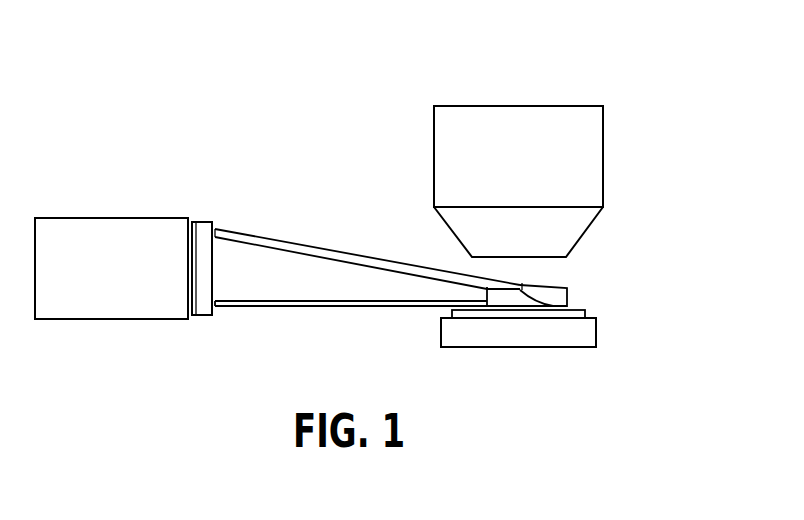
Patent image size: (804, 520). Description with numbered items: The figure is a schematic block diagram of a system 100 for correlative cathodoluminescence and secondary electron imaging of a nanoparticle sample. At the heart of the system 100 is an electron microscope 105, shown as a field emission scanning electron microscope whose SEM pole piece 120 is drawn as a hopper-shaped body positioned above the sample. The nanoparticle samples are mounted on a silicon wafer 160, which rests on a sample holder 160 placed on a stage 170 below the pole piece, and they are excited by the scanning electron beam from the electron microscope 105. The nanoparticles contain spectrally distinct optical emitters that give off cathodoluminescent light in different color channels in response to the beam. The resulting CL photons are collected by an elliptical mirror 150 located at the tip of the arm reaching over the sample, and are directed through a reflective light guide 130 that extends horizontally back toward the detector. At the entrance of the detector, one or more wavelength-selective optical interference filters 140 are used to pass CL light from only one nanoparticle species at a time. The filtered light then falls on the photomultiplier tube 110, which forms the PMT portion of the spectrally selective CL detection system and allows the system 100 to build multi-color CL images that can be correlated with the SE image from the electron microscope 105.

The system for correlative CL and SE imaging 100 is at (628, 367).
The electron microscope 105 is at (525, 128).
The photomultiplier tube 110 is at (120, 319).
The SEM pole piece 120 is at (592, 227).
The reflective light guide 130 is at (357, 303).
The wavelength-selective optical interference filter 140 is at (200, 213).
The elliptical mirror 150 is at (485, 283).
The silicon wafer / sample holder 160 is at (585, 311).
The stage / base 170 is at (525, 347).